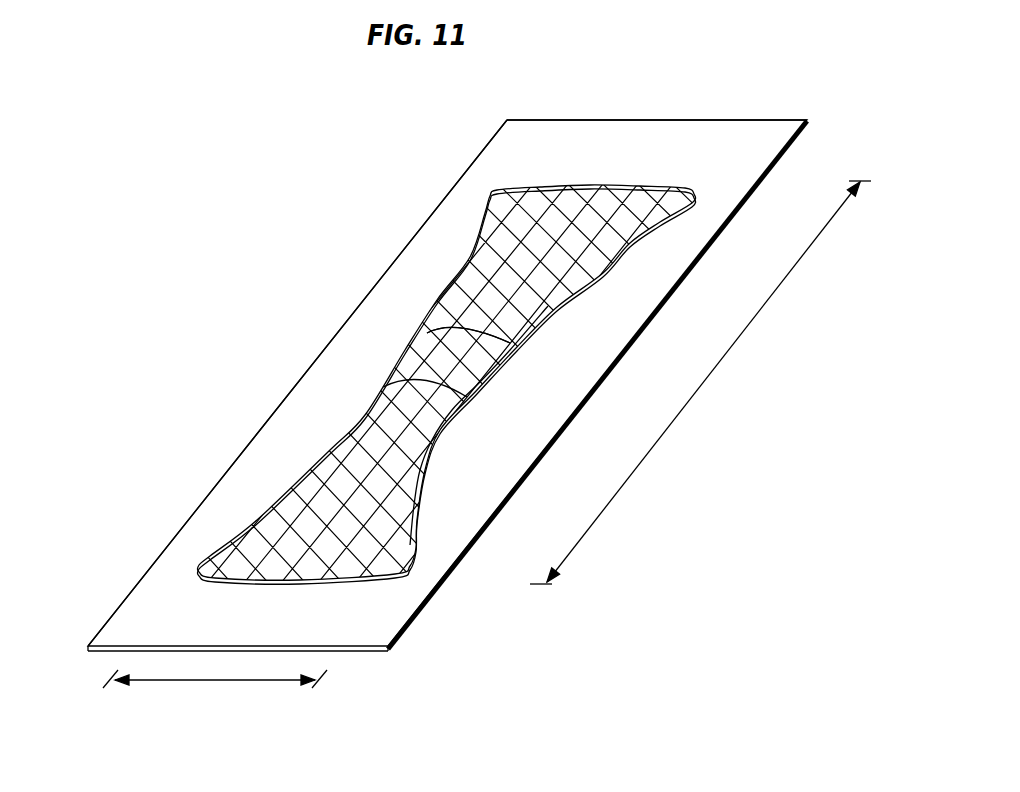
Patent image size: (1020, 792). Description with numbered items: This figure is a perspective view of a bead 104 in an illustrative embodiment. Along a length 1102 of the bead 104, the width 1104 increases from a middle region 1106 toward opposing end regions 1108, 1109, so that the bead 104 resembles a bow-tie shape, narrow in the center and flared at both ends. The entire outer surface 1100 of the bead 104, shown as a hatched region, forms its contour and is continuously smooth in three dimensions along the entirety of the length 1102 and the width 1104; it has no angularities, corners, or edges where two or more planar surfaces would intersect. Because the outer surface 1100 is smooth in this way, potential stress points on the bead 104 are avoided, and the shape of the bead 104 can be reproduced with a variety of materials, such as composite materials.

The bead 104 is at (312, 176).
The outer surface 1100 is at (522, 313).
The length 1102 is at (650, 447).
The width 1104 is at (195, 681).
The middle region 1106 is at (375, 330).
The end region 1108 is at (440, 173).
The end region 1109 is at (150, 540).